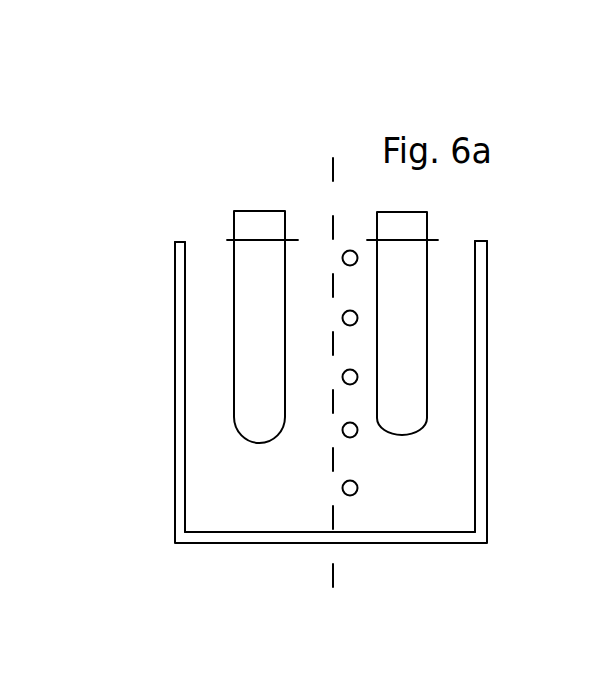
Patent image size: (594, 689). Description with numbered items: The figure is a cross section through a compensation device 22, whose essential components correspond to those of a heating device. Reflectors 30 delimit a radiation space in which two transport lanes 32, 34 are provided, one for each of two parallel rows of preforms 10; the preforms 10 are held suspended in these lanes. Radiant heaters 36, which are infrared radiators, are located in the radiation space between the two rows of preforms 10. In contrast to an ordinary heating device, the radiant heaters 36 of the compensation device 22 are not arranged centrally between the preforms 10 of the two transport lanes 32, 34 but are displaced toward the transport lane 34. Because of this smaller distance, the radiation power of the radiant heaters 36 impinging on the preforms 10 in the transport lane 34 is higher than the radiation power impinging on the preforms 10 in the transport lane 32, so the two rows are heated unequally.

The preform 10 is at (246, 260).
The compensation device 22 is at (176, 169).
The reflector 30 is at (178, 340).
The transport lane 32 is at (253, 512).
The transport lane 34 is at (405, 507).
The radiant heater 36 is at (343, 258).